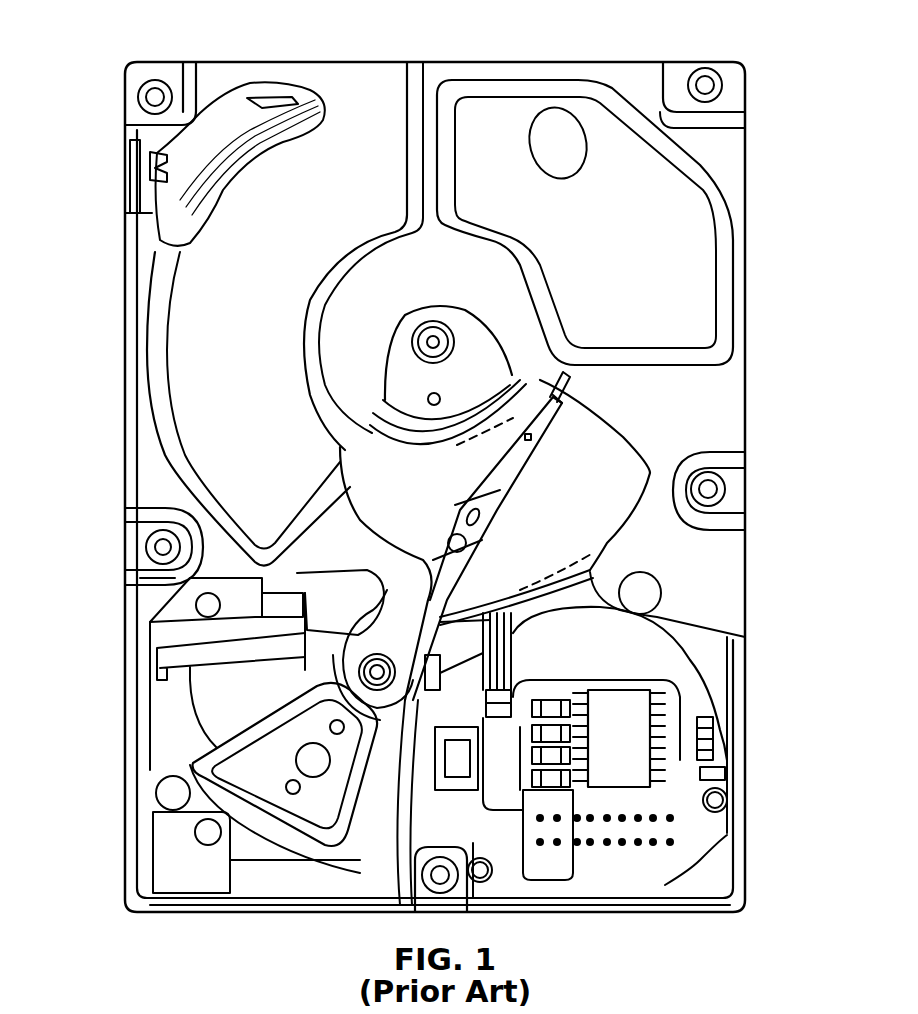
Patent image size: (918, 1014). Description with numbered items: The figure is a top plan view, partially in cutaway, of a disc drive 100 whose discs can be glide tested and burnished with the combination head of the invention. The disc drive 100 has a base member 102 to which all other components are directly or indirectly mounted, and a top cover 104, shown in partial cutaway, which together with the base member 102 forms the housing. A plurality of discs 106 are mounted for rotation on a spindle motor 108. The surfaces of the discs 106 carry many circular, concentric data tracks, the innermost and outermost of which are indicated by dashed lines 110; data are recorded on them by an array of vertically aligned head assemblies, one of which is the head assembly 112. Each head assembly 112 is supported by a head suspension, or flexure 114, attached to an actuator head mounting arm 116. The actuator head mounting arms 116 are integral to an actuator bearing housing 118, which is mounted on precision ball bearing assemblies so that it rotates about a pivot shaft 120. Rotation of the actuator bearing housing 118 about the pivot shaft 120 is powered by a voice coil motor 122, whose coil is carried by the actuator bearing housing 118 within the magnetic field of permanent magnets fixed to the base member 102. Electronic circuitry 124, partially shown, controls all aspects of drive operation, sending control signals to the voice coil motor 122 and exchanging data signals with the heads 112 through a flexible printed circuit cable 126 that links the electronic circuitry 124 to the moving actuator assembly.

The disc drive 100 is at (112, 461).
The base member 102 is at (125, 850).
The top cover 104 is at (432, 72).
The discs 106 is at (597, 533).
The spindle motor 108 is at (473, 341).
The data tracks 110 is at (460, 452).
The head assembly 112 is at (565, 394).
The head suspension (flexure) 114 is at (497, 487).
The actuator head mounting arm 116 is at (442, 591).
The actuator bearing housing 118 is at (350, 603).
The pivot shaft 120 is at (379, 666).
The voice coil motor (VCM) 122 is at (283, 847).
The electronic circuitry 124 is at (675, 707).
The flexible printed circuit cable (PCC) 126 is at (667, 637).